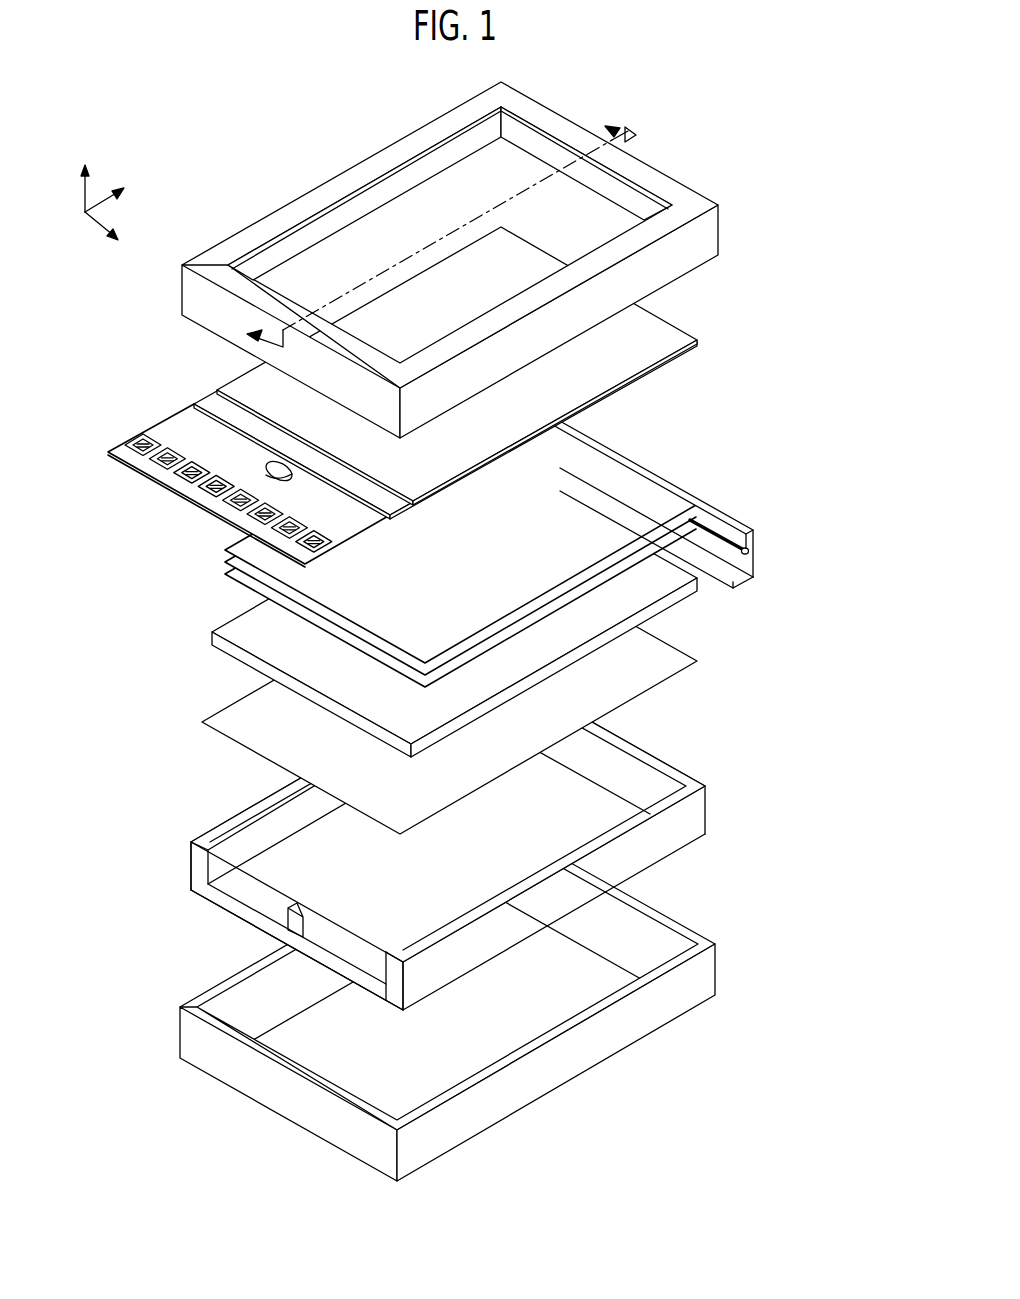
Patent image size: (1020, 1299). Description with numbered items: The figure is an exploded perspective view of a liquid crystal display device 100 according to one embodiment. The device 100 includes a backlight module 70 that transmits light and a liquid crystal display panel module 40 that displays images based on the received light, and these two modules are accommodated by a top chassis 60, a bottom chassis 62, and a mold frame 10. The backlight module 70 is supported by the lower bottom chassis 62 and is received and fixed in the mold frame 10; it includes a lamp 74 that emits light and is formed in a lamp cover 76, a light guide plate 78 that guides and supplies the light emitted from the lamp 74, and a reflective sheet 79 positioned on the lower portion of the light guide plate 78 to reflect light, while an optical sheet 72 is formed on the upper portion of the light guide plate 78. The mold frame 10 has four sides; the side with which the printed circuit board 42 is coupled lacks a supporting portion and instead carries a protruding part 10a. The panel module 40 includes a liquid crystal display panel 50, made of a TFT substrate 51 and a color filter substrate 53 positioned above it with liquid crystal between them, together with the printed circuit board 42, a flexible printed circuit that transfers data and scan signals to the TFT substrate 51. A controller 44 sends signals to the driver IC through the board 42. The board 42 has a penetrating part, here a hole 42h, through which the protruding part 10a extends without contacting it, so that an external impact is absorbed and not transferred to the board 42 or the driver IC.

The liquid crystal display device 100 is at (696, 89).
The mold frame 10 is at (412, 838).
The protruding part 10a is at (292, 906).
The liquid crystal display panel module 40 is at (454, 373).
The printed circuit board 42 is at (219, 485).
The hole 42h is at (268, 467).
The controller 44 is at (139, 442).
The liquid crystal display panel 50 is at (452, 280).
The TFT substrate 51 is at (210, 401).
The color filter substrate 53 is at (250, 377).
The top chassis 60 is at (309, 204).
The bottom chassis 62 is at (208, 986).
The backlight module 70 is at (459, 613).
The optical sheet 72 is at (441, 539).
The lamp 74 is at (752, 549).
The lamp cover 76 is at (720, 524).
The light guide plate 78 is at (214, 636).
The reflective sheet 79 is at (213, 720).